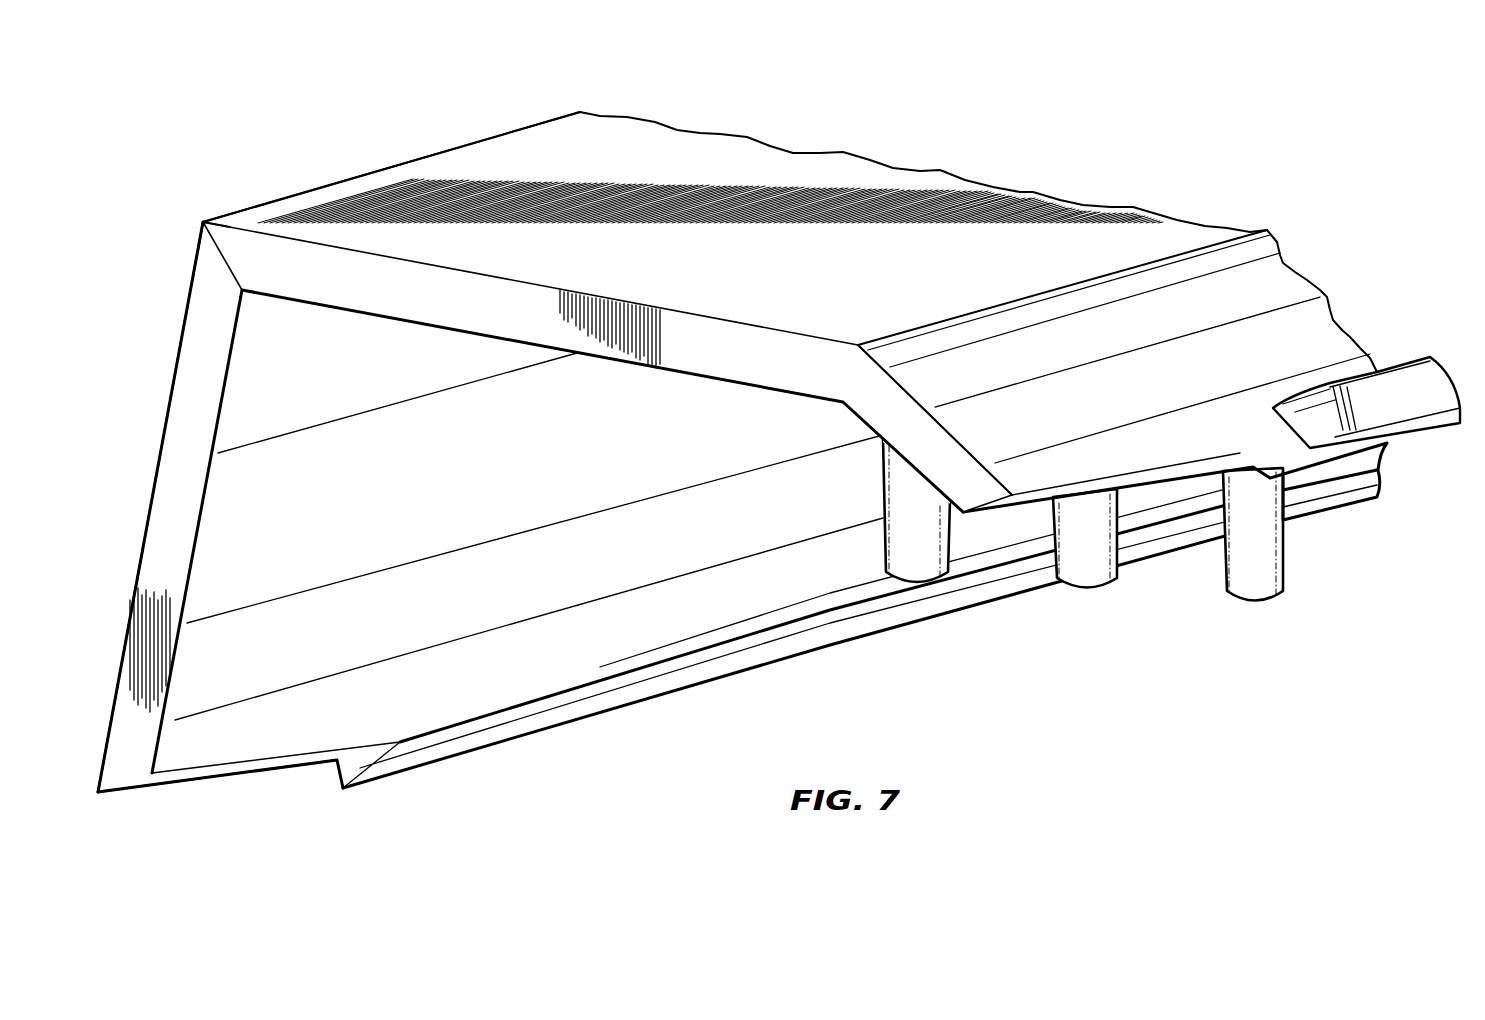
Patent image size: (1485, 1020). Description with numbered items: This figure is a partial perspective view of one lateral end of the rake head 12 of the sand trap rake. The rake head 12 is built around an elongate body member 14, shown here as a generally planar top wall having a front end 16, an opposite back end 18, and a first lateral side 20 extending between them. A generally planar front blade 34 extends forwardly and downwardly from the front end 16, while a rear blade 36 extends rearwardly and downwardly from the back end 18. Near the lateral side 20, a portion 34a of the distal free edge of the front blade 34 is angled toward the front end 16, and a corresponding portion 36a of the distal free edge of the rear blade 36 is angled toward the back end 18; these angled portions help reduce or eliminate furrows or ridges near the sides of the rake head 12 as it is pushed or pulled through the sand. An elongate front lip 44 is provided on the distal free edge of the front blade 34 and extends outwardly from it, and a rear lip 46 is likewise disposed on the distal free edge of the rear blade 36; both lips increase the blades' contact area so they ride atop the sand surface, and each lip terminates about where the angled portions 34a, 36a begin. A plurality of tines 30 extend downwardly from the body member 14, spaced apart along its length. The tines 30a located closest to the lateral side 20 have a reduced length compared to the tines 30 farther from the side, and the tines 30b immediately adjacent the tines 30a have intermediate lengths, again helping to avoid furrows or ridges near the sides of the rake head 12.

The rake head 12 is at (958, 112).
The elongate body member 14 is at (738, 148).
The front end 16 is at (997, 312).
The back end 18 is at (420, 150).
The first lateral side 20 is at (272, 258).
The tines 30 is at (1257, 602).
The tines located closest to the lateral sides 30a is at (917, 588).
The tines immediately adjacent tines 30a 30b is at (1095, 592).
The front blade 34 is at (1318, 320).
The angled portion of the front blade distal free edge 34a is at (1147, 477).
The rear blade 36 is at (529, 536).
The angled portion of the rear blade distal free edge 36a is at (227, 770).
The front lip 44 is at (1432, 383).
The rear lip 46 is at (792, 661).